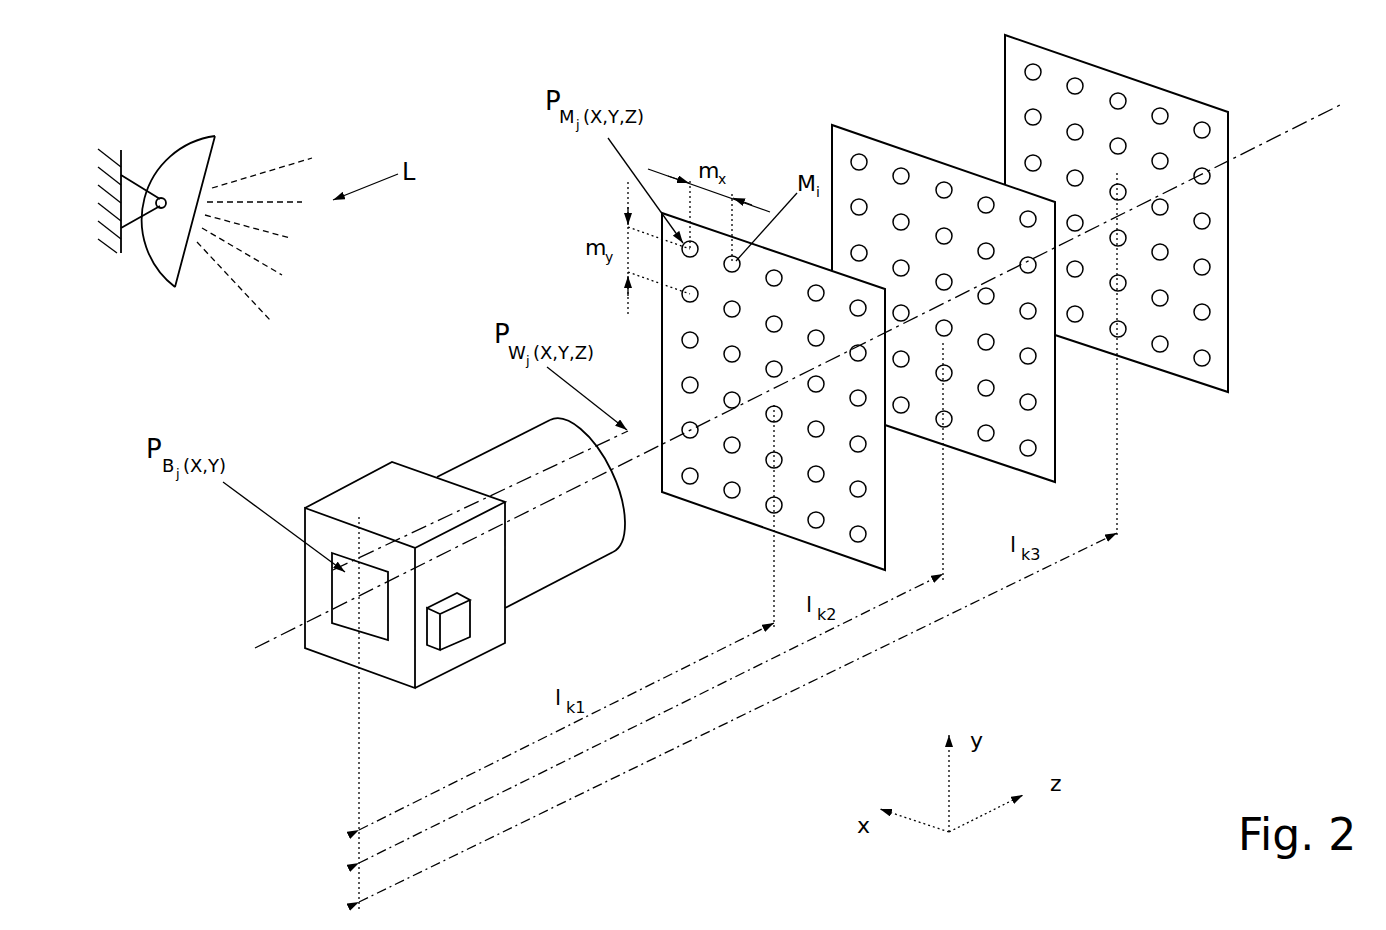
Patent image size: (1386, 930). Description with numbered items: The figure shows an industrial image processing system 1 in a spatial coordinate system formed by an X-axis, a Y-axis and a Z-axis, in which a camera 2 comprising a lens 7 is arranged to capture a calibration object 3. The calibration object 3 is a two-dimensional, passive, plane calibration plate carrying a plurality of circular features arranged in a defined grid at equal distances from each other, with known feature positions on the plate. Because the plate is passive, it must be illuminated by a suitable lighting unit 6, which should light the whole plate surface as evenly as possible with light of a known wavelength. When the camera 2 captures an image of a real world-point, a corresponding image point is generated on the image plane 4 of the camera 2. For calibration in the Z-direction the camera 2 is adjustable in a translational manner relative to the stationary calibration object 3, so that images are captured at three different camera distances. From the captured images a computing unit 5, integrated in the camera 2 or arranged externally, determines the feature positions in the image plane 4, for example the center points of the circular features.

The industrial image processing system 1 is at (340, 118).
The camera 2 is at (360, 445).
The calibration object 3 is at (708, 512).
The image plane 4 is at (331, 586).
The computing unit 5 is at (453, 625).
The lighting unit 6 is at (173, 237).
The lens 7 is at (580, 528).